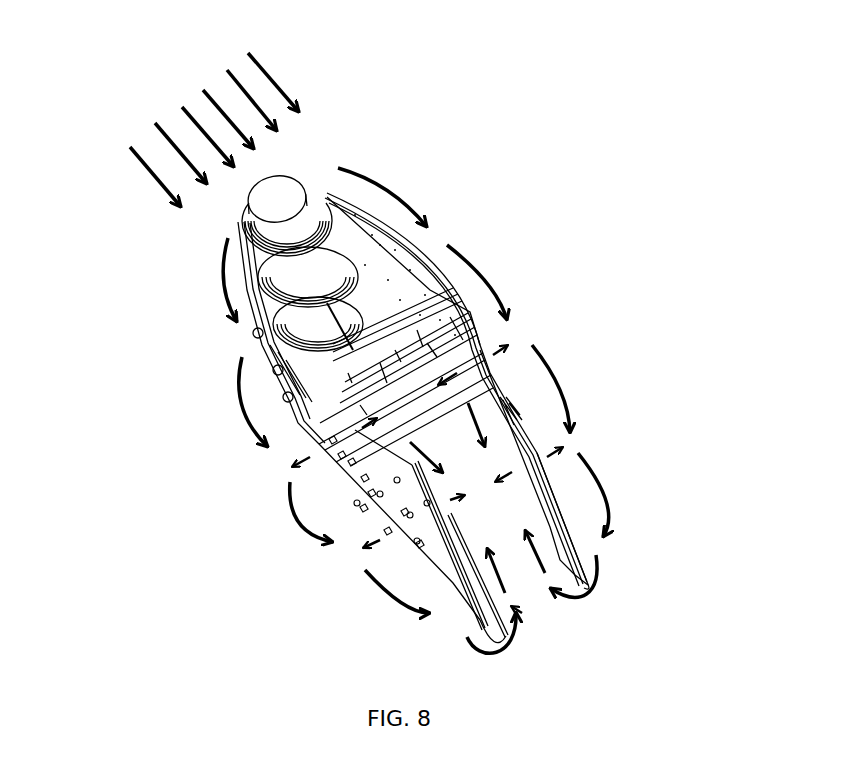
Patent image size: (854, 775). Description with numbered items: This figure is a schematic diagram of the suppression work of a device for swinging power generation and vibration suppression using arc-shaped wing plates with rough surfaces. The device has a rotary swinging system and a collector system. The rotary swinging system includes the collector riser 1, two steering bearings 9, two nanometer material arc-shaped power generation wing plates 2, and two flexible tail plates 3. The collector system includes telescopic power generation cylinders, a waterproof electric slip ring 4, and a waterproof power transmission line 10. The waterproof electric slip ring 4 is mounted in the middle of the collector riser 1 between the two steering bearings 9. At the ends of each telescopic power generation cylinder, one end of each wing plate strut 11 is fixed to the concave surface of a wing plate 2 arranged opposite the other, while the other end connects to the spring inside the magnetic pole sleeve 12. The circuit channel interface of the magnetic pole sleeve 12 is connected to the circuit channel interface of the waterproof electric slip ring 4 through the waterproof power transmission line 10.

The collector riser 1 is at (278, 190).
The nanometer material arc-shaped power generation wing plate 2 is at (358, 270).
The flexible tail plate 3 is at (537, 453).
The waterproof electric slip ring 4 is at (298, 306).
The steering bearing 9 is at (240, 222).
The waterproof power transmission line 10 is at (343, 353).
The wing plate strut 11 is at (427, 363).
The magnetic pole sleeve 12 is at (382, 362).